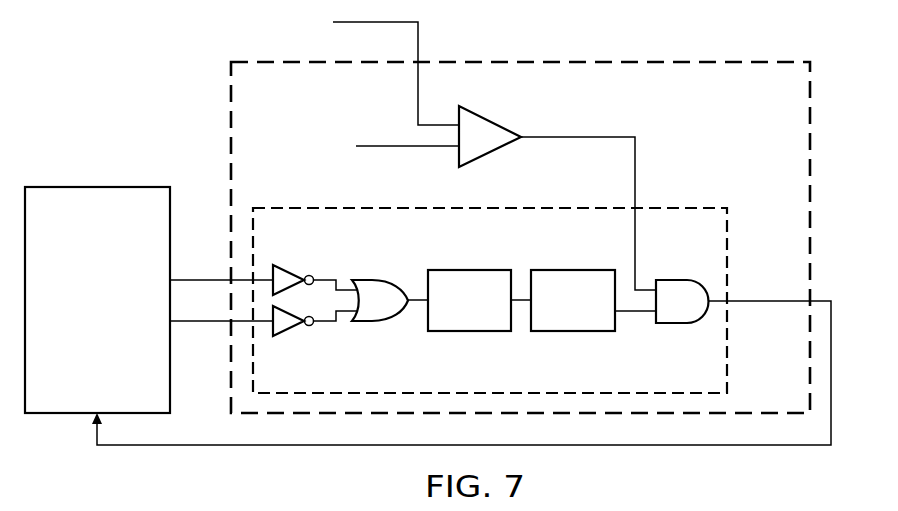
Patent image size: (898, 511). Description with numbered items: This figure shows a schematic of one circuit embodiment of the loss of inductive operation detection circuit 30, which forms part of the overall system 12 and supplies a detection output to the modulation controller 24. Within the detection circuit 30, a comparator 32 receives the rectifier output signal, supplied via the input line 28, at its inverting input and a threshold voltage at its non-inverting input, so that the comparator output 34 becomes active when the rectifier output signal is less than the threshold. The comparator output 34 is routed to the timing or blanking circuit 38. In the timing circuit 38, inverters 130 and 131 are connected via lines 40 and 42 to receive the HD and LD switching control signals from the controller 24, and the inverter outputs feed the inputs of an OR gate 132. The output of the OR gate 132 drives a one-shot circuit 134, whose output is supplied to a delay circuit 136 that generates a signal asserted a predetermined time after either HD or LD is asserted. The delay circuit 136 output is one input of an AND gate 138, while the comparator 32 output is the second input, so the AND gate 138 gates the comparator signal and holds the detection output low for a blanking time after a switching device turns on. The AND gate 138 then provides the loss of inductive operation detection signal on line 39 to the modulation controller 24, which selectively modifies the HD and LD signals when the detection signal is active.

The induction heating system 12 is at (138, 59).
The modulation controller 24 is at (88, 187).
The rectified current signal input 28 is at (419, 42).
The detection circuit 30 is at (744, 60).
The comparator 32 is at (489, 115).
The comparator output 34 is at (578, 136).
The timing circuit 38 is at (674, 206).
The line 39 is at (770, 303).
The line 40 is at (210, 279).
The line 42 is at (210, 323).
The inverter 130 is at (292, 265).
The inverter 131 is at (290, 337).
The OR gate 132 is at (370, 322).
The 1-shot circuit 134 is at (470, 332).
The delay circuit 136 is at (575, 332).
The AND gate 138 is at (670, 323).